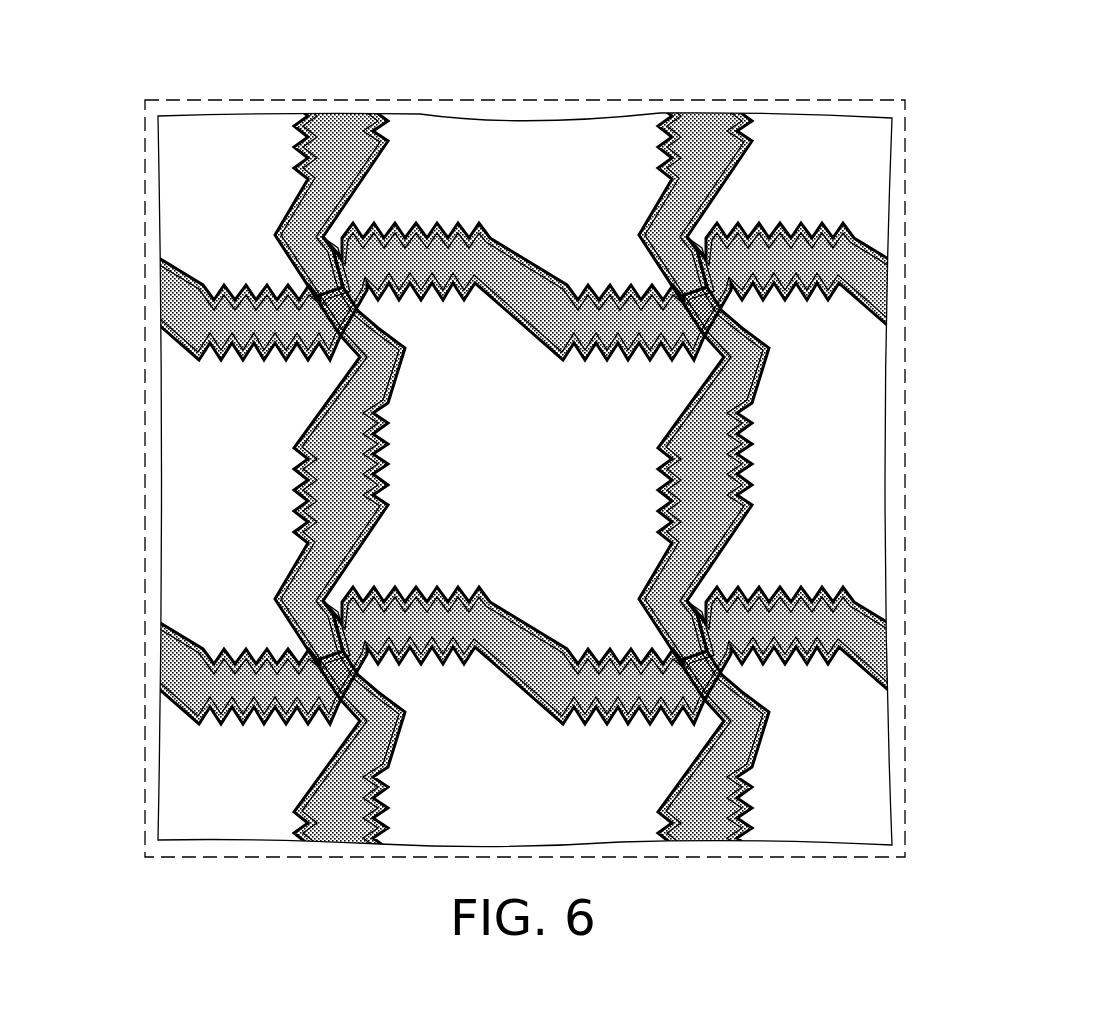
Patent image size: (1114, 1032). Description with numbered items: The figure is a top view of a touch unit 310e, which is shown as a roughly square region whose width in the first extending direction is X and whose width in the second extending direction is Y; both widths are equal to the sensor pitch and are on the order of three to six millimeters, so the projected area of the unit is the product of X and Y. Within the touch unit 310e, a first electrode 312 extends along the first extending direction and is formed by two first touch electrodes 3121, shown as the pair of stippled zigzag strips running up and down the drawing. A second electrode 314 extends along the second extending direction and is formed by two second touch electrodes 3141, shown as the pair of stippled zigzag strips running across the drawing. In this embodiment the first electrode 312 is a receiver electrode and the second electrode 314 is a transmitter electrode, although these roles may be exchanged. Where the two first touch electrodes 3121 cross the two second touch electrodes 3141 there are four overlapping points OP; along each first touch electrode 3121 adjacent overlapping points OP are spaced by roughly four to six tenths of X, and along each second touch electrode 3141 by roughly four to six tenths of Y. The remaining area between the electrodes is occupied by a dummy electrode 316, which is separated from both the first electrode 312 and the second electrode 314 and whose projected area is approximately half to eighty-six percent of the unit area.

The touch unit 310e is at (1090, 873).
The first electrode 312 is at (310, 70).
The first touch electrode 3121 is at (343, 117).
The second electrode 314 is at (975, 278).
The second touch electrode 3141 is at (890, 289).
The dummy electrode 316 is at (815, 117).
The overlapping point OP is at (393, 333).
The width in first extending direction X is at (124, 103).
The width in second extending direction Y is at (145, 859).